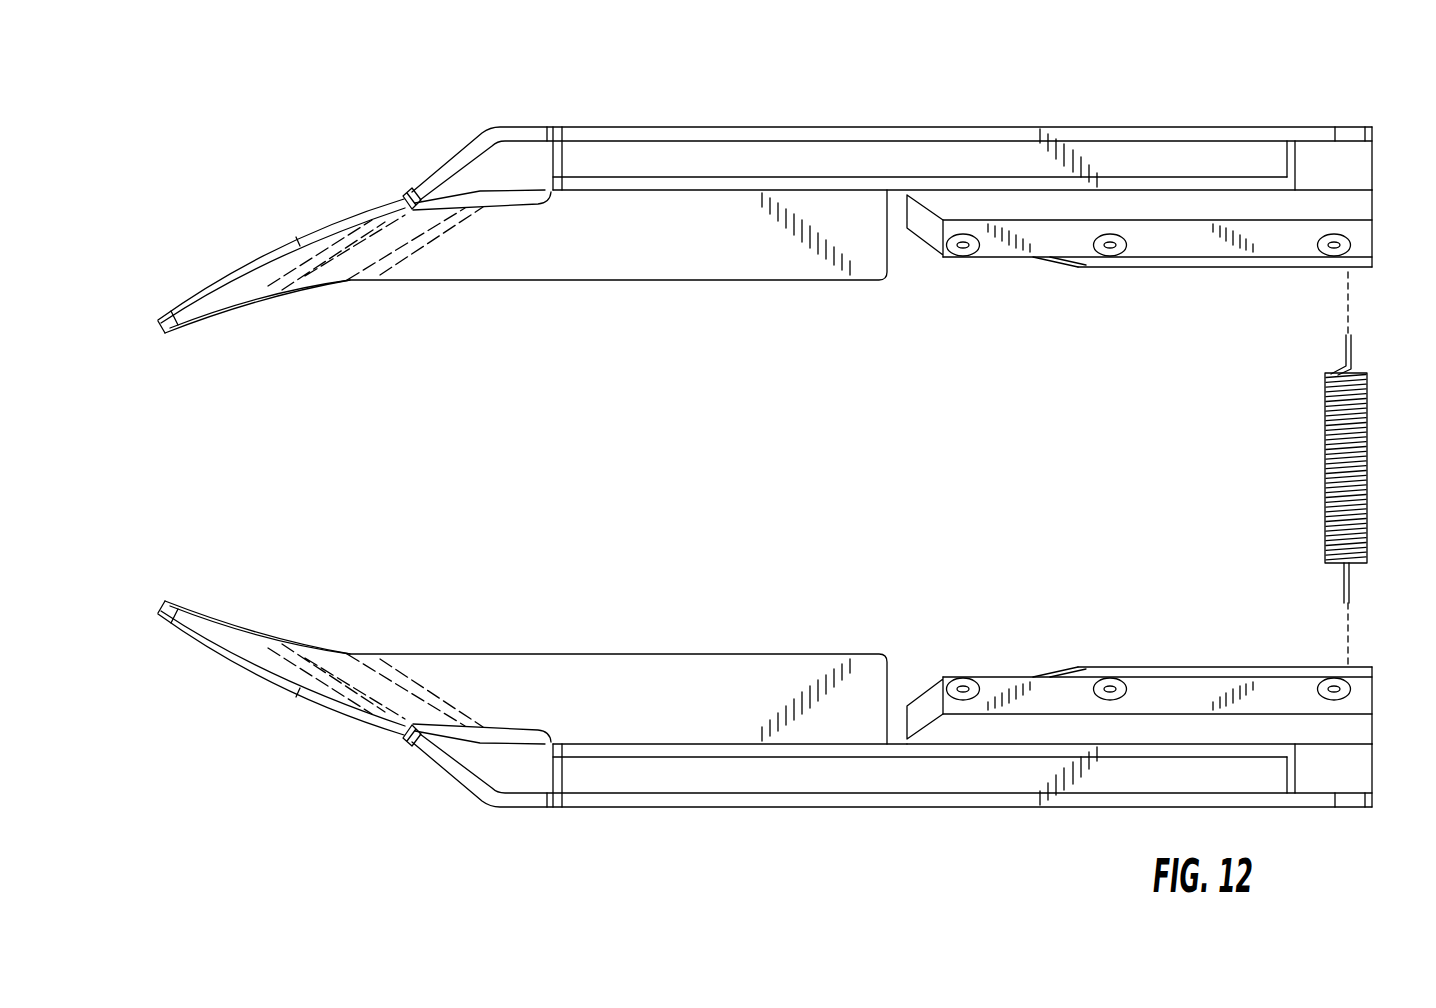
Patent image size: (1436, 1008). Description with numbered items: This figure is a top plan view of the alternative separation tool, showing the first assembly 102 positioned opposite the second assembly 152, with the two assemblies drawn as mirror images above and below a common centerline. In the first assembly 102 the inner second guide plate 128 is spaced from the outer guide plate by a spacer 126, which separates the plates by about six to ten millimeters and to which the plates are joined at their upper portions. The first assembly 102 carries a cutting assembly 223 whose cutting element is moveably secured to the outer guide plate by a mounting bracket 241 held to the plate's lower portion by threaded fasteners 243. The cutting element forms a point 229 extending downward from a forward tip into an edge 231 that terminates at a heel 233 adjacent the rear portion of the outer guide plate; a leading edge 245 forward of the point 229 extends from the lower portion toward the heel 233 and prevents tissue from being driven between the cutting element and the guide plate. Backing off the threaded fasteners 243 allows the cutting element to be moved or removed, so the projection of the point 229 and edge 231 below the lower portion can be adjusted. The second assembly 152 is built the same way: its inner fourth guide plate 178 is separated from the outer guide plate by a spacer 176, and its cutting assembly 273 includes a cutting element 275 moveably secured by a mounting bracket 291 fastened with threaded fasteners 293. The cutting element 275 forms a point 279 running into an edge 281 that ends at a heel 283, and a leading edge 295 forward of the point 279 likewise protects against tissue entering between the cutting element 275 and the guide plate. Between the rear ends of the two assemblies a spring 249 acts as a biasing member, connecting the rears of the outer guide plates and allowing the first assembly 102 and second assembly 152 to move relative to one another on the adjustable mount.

The first assembly 102 is at (288, 152).
The spacer 126 is at (685, 157).
The inner second guide plate 128 is at (695, 258).
The leading edge 245 is at (928, 230).
The mounting bracket 241 is at (1190, 230).
The threaded fasteners 243 is at (1108, 257).
The point 229 is at (1058, 263).
The edge 231 is at (1186, 269).
The heel 233 is at (1373, 259).
The cutting assembly 223 is at (1273, 312).
The spring 249 is at (1368, 462).
The cutting assembly 273 is at (1246, 578).
The second assembly 152 is at (288, 784).
The spacer 176 is at (685, 780).
The inner fourth guide plate 178 is at (695, 680).
The leading edge 295 is at (928, 705).
The threaded fasteners 293 is at (968, 689).
The point 279 is at (1075, 667).
The edge 281 is at (1186, 667).
The cutting element 275 is at (1280, 680).
The heel 283 is at (1373, 676).
The mounting bracket 291 is at (1015, 735).